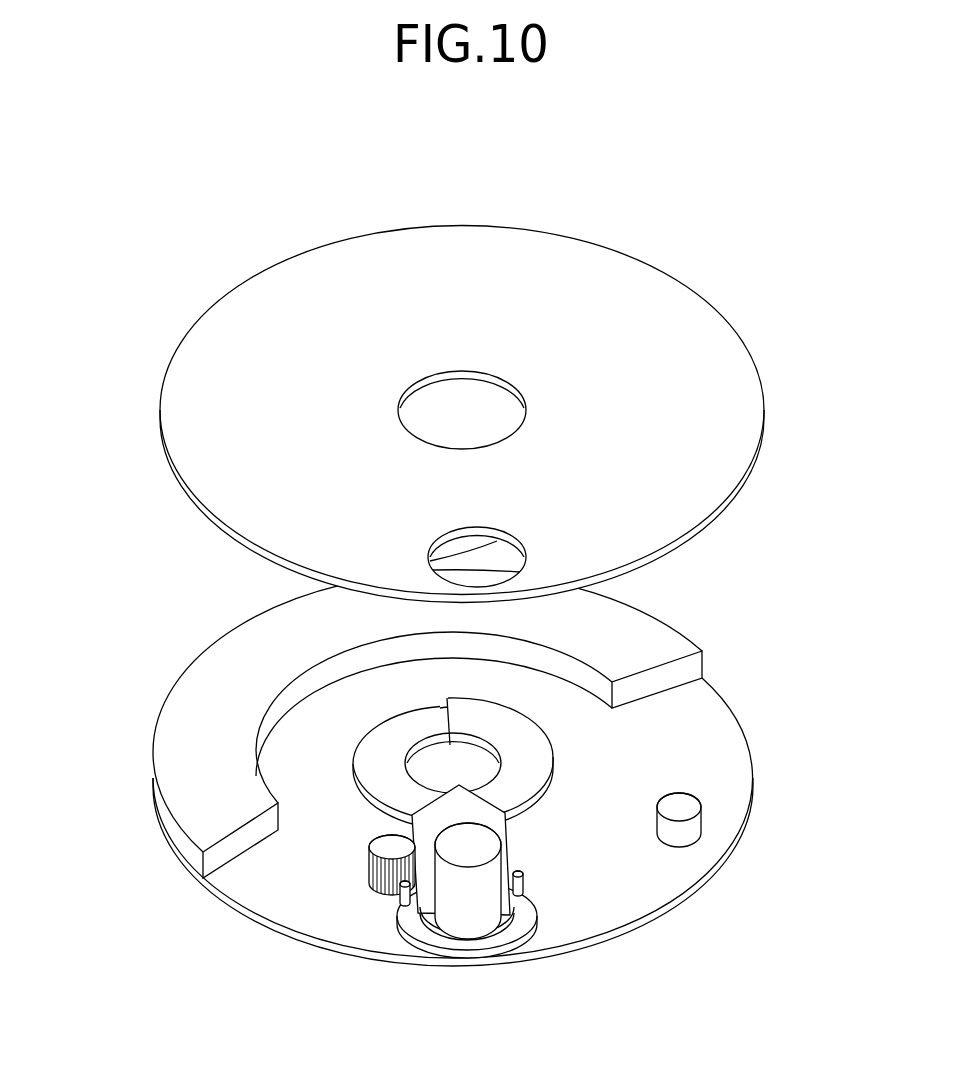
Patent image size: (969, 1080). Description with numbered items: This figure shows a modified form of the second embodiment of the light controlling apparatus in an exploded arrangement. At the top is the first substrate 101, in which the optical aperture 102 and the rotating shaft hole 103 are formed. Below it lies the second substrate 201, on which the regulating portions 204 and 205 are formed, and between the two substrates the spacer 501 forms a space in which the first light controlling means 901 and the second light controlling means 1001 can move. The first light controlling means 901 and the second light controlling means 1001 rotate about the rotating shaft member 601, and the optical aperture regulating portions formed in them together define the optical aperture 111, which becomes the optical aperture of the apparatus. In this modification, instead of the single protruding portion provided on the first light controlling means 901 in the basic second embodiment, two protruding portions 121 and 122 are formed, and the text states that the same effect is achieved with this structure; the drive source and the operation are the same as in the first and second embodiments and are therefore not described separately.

The first substrate 101 is at (694, 438).
The optical aperture 102 is at (412, 432).
The rotating shaft hole 103 is at (430, 562).
The second substrate 201 is at (677, 737).
The spacer 501 is at (668, 638).
The first light controlling means 901 is at (375, 764).
The optical aperture 111 is at (430, 762).
The second light controlling means 1001 is at (527, 773).
The rotating shaft member 601 is at (488, 895).
The regulating portion 205 is at (383, 848).
The protruding portion 121 is at (530, 882).
The protruding portion 122 is at (403, 898).
The regulating portion 204 is at (675, 807).